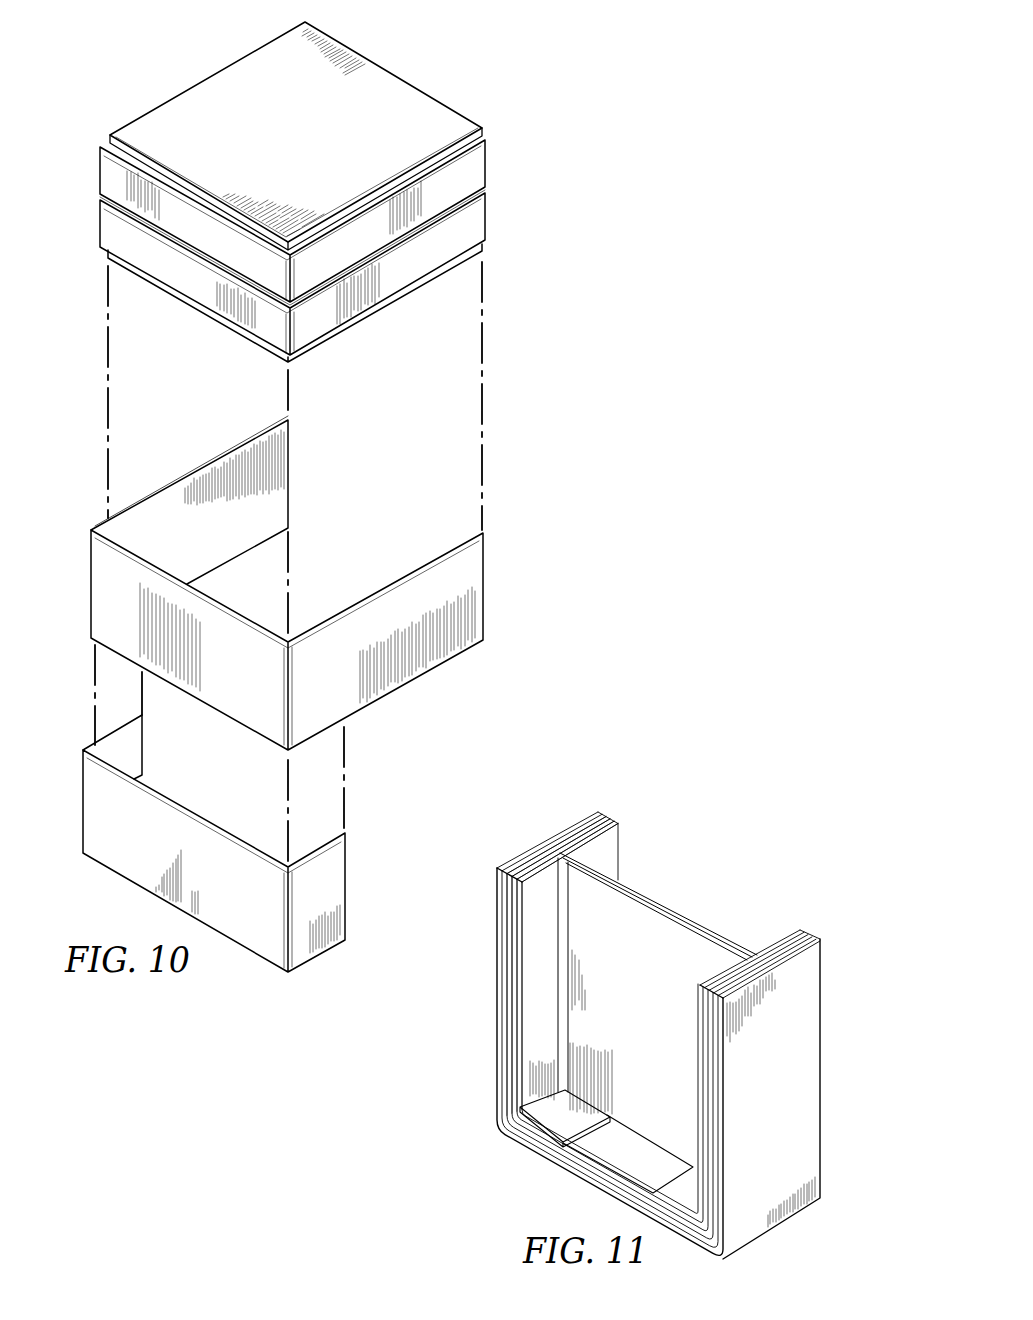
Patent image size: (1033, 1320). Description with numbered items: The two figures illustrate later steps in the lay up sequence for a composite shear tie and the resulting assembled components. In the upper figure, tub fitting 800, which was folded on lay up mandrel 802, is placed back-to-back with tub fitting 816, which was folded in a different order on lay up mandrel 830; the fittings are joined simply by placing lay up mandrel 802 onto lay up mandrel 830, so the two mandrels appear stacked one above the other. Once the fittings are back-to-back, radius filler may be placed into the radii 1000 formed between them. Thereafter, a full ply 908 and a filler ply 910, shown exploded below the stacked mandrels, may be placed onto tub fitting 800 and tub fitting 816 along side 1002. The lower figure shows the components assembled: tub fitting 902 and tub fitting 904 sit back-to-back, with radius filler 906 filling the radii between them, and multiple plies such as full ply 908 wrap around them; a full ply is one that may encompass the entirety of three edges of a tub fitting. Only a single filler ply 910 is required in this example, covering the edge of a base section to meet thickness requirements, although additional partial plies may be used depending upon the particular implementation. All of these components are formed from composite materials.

In FIG. 10, the tub fitting 800 is at (485, 163).
In FIG. 10, the lay up mandrel 802 is at (165, 113).
In FIG. 10, the tub fitting 816 is at (485, 220).
In FIG. 10, the lay up mandrel 830 is at (177, 299).
In FIG. 10, the radii 1000 is at (286, 192).
In FIG. 10, the side 1002 is at (203, 228).
In FIG. 10, the full ply 908 is at (485, 592).
In FIG. 11, the full ply 908 is at (811, 934).
In FIG. 10, the filler ply 910 is at (348, 893).
In FIG. 11, the filler ply 910 is at (558, 1152).
In FIG. 11, the tub fitting 902 is at (531, 882).
In FIG. 11, the tub fitting 904 is at (590, 848).
In FIG. 11, the radius filler 906 is at (754, 958).